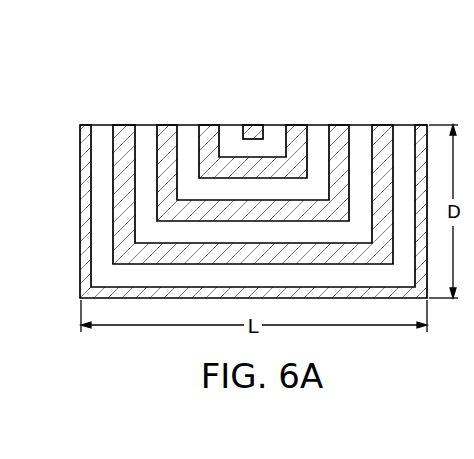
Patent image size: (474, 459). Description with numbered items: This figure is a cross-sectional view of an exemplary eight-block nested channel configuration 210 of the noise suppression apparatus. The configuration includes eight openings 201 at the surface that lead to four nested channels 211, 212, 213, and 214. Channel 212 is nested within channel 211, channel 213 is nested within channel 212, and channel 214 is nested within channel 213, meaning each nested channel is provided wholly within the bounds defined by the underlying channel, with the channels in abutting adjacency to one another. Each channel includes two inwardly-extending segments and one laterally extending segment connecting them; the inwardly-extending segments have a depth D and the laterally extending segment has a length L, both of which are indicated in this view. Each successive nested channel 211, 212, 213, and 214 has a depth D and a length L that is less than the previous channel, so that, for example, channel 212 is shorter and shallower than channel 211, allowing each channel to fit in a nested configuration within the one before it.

The openings 201 is at (103, 125).
The eight-block nested channel configuration 210 is at (235, 160).
The channel 211 is at (102, 257).
The channel 212 is at (207, 228).
The channel 213 is at (245, 187).
The channel 214 is at (275, 150).